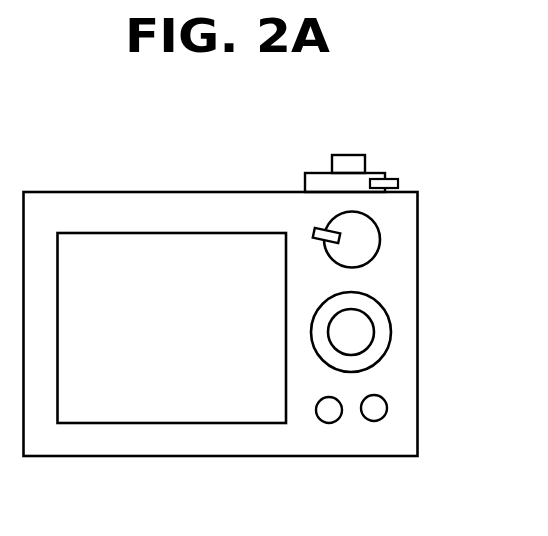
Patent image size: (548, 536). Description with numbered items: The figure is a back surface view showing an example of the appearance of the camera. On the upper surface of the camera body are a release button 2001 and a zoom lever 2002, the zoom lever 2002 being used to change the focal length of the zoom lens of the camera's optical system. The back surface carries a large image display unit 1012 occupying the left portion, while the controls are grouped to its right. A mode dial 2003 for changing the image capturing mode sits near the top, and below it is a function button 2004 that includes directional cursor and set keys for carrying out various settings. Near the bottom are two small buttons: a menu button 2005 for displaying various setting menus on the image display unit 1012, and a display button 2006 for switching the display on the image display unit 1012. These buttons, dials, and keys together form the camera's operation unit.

The image display unit 1012 is at (160, 413).
The release button 2001 is at (383, 137).
The zoom lever 2002 is at (398, 183).
The mode dial 2003 is at (370, 238).
The function button 2004 is at (386, 337).
The menu button 2005 is at (387, 403).
The display button 2006 is at (330, 413).